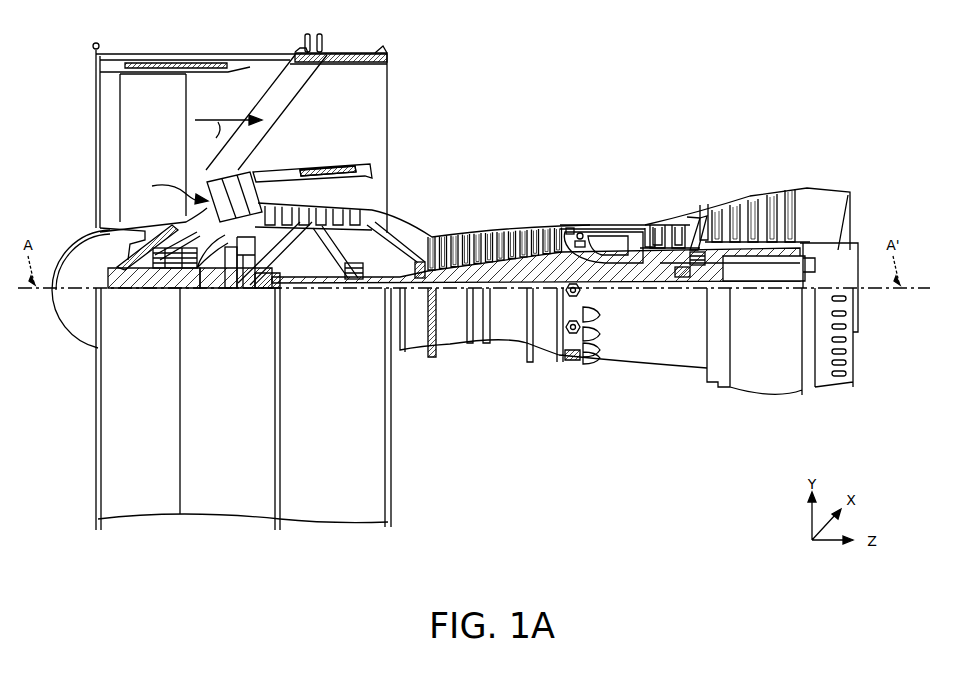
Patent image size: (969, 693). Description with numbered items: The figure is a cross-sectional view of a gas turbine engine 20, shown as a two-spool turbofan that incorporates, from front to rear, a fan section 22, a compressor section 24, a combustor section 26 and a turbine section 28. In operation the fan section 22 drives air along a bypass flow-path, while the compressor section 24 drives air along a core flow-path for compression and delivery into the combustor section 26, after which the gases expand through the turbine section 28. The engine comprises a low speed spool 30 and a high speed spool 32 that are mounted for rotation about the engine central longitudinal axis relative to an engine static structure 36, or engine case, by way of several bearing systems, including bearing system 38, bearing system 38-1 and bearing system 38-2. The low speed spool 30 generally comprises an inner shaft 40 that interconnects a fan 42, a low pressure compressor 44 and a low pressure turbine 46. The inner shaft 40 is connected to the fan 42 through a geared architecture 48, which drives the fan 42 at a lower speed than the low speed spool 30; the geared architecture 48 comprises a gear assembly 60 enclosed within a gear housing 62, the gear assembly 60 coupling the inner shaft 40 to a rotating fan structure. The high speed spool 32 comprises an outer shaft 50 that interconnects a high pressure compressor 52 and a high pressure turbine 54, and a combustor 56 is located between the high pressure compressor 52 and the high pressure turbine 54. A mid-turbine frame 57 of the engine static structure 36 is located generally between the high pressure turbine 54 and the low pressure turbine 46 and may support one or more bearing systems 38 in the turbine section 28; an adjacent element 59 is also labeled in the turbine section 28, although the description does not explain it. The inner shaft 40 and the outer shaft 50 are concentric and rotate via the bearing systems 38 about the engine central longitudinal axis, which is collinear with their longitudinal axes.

The gas turbine engine 20 is at (636, 82).
The fan section 22 is at (90, 42).
The compressor section 24 is at (282, 140).
The combustor section 26 is at (643, 140).
The turbine section 28 is at (805, 140).
The low speed spool 30 is at (515, 300).
The high speed spool 32 is at (541, 255).
The engine static structure 36 is at (226, 505).
The bearing system 38-1 is at (162, 276).
The bearing system 38-2 is at (352, 287).
The bearing system 38 is at (692, 272).
The inner shaft 40 is at (402, 290).
The fan 42 is at (153, 145).
The low pressure compressor 44 is at (337, 212).
The low pressure turbine 46 is at (755, 200).
The geared architecture 48 is at (246, 296).
The outer shaft 50 is at (602, 268).
The high pressure compressor 52 is at (498, 258).
The high pressure turbine 54 is at (656, 226).
The combustor 56 is at (600, 245).
The mid-turbine frame 57 is at (687, 217).
The turbine vanes 59 is at (692, 238).
The gear assembly 60 is at (258, 278).
The gear housing 62 is at (256, 256).